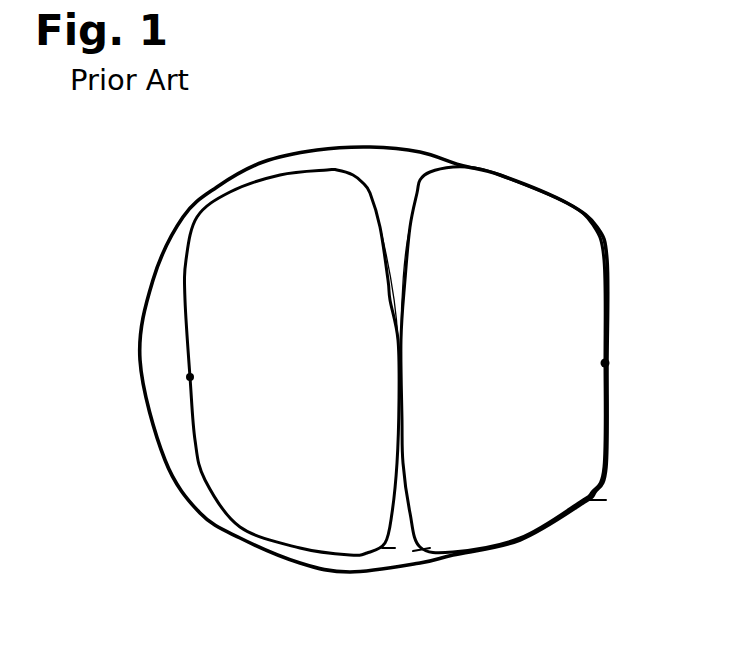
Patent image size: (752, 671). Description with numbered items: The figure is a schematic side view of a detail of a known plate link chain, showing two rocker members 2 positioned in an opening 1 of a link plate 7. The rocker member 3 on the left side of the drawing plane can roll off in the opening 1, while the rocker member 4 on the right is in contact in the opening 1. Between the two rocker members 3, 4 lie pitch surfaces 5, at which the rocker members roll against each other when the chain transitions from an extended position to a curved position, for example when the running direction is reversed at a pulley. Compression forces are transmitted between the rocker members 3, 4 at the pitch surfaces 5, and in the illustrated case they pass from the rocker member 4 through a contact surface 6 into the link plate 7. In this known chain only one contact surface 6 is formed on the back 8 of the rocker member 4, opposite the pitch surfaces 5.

The opening 1 is at (315, 572).
The rocker members 2 is at (448, 193).
The rocker member 3 is at (260, 520).
The rocker member 4 is at (517, 522).
The pitch surfaces 5 is at (430, 548).
The contact surface 6 is at (605, 363).
The link plate 7 is at (536, 125).
The back 8 is at (590, 500).